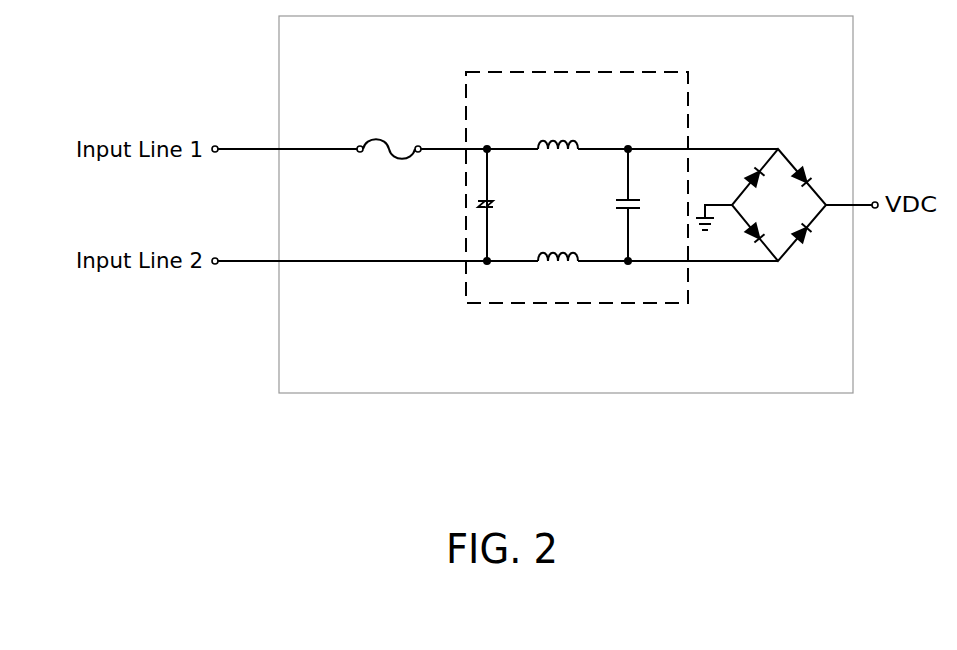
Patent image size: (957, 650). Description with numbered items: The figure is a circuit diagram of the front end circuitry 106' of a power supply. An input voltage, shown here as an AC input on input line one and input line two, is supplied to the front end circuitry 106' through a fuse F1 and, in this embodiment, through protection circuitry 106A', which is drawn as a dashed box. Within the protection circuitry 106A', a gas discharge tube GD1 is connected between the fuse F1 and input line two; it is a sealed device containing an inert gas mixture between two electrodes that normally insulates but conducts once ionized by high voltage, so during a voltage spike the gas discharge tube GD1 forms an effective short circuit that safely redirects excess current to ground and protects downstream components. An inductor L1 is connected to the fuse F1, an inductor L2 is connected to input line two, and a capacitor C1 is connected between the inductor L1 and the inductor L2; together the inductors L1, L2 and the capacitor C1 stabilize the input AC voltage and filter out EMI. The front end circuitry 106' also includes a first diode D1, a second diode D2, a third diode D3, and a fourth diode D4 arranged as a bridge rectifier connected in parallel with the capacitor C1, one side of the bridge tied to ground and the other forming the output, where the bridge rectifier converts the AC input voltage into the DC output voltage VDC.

The front end circuitry 106' is at (566, 204).
The protection circuitry 106A' is at (577, 187).
The fuse F1 is at (389, 135).
The gas discharge tube GD1 is at (513, 205).
The inductor L1 is at (558, 131).
The inductor L2 is at (558, 244).
The capacitor C1 is at (643, 205).
The first diode D1 is at (741, 170).
The second diode D2 is at (741, 242).
The third diode D3 is at (818, 170).
The fourth diode D4 is at (818, 242).